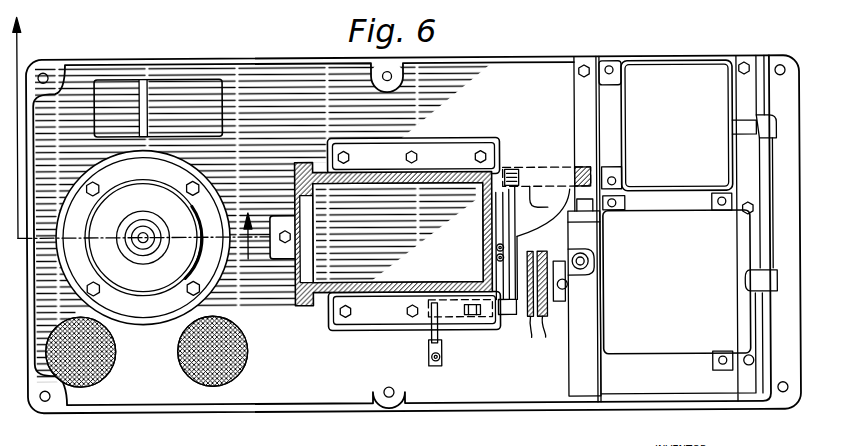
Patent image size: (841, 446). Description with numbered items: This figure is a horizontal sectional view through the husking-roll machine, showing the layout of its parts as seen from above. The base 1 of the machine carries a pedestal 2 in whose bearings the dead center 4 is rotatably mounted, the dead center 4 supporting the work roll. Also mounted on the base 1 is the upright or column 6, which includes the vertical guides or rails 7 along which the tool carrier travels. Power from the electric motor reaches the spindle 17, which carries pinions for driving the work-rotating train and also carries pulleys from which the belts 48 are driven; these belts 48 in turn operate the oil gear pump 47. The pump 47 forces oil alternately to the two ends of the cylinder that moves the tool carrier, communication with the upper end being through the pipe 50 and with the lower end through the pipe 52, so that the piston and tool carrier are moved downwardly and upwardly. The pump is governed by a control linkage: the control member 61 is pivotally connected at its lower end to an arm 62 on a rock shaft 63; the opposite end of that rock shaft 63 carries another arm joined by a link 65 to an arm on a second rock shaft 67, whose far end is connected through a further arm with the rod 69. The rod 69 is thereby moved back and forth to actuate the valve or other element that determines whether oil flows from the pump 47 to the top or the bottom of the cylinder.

The base 1 is at (188, 395).
The pedestal 2 is at (162, 292).
The dead center 4 is at (143, 241).
The upright or column 6 is at (446, 290).
The vertical guides or rails 7 is at (306, 305).
The spindle 17 is at (142, 146).
The oil gear pump 47 is at (672, 228).
The belts 48 is at (537, 321).
The pipe 50 is at (496, 247).
The pipe 52 is at (496, 259).
The control member 61 is at (436, 366).
The arm 62 is at (431, 338).
The rock shaft 63 is at (462, 312).
The link 65 is at (513, 251).
The rock shaft 67 is at (549, 171).
The rod 69 is at (614, 195).